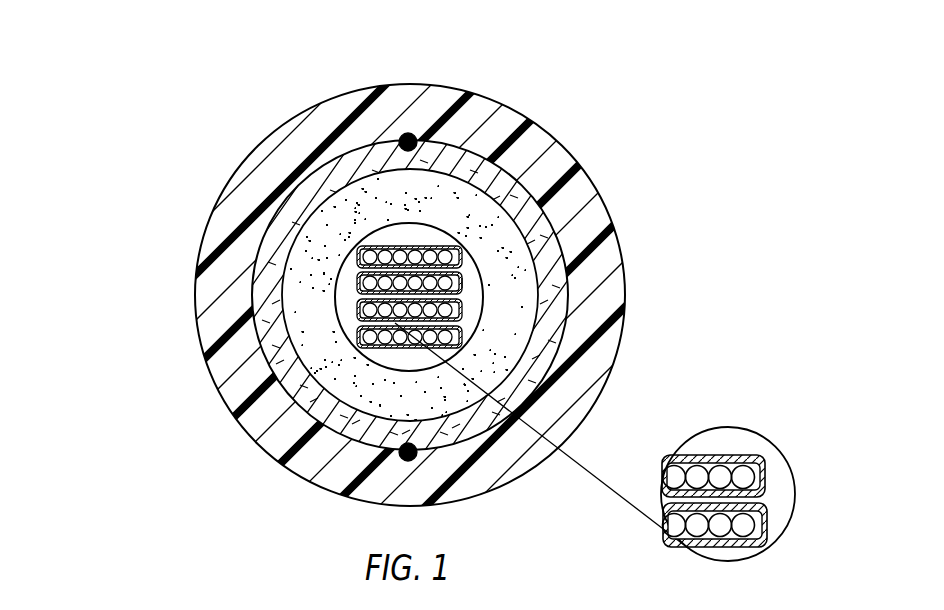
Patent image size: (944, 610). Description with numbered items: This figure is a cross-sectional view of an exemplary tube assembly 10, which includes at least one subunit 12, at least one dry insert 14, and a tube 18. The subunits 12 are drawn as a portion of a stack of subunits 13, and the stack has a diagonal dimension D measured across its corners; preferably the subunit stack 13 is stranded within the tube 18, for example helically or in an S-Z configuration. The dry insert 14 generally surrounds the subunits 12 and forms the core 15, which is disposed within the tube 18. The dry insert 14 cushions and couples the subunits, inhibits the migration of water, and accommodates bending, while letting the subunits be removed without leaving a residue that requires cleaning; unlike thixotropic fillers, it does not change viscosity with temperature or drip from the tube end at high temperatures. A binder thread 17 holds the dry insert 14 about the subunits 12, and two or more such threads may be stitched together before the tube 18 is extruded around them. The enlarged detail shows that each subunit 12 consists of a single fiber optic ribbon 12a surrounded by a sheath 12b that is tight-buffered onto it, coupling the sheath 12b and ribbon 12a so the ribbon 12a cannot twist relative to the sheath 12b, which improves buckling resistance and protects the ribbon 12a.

The tube assembly 10 is at (233, 70).
The subunit 12 is at (493, 374).
The fiber optic ribbon 12a is at (740, 548).
The sheath 12b is at (765, 468).
The stack of subunits 13 is at (434, 239).
The dry insert 14 is at (555, 299).
The core 15 is at (315, 342).
The binder thread 17 is at (411, 138).
The tube 18 is at (493, 374).
The diagonal dimension D is at (465, 282).